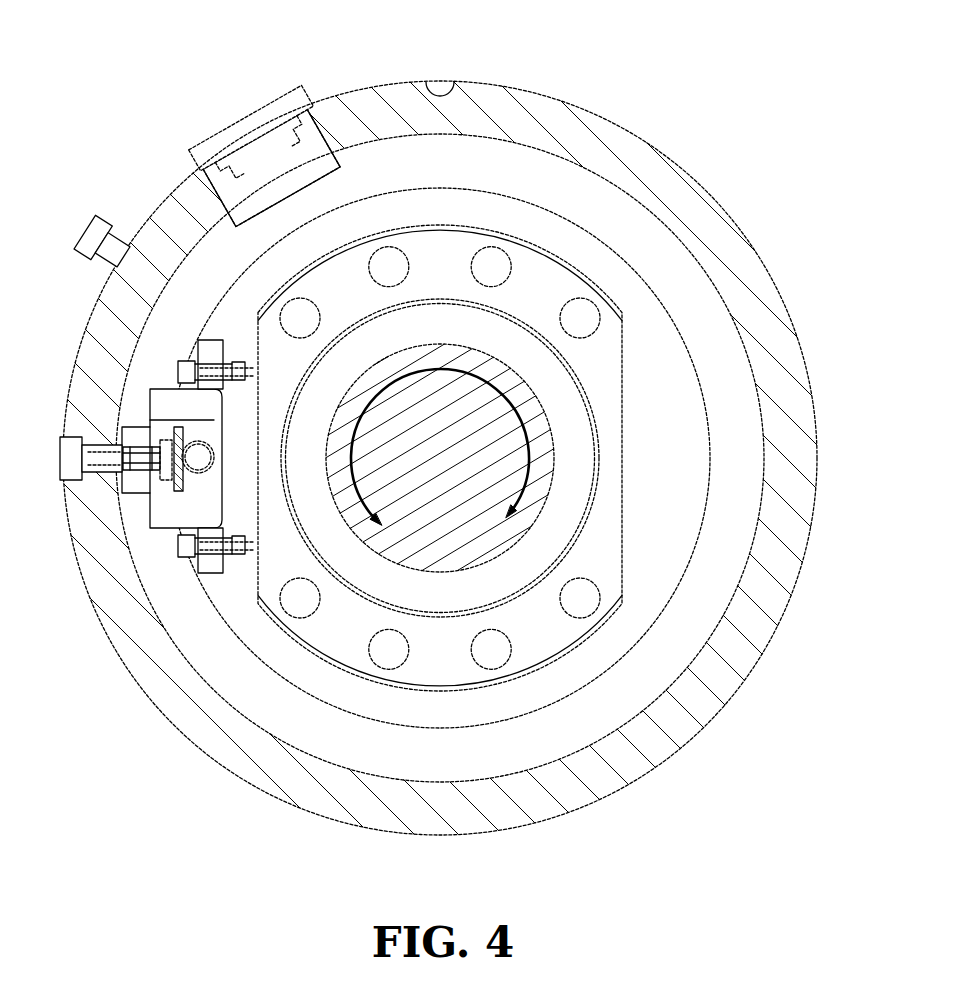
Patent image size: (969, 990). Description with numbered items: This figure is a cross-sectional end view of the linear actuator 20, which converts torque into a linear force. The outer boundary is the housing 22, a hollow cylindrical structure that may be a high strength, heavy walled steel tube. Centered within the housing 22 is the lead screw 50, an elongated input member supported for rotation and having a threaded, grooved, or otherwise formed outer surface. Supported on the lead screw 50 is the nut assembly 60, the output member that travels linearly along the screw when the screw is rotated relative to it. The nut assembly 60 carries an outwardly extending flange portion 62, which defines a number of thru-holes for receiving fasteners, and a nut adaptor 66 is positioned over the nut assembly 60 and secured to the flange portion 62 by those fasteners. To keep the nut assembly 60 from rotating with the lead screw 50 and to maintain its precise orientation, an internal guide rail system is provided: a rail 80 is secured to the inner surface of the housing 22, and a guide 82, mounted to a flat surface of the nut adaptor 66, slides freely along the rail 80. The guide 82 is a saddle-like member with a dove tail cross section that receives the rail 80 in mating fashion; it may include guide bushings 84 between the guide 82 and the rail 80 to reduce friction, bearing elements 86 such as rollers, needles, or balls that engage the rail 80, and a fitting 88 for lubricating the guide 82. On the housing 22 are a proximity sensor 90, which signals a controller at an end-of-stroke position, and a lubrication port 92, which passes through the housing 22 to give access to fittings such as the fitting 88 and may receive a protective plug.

The linear actuator 20 is at (654, 147).
The housing 22 is at (566, 118).
The lead screw 50 is at (530, 424).
The nut assembly 60 is at (573, 458).
The flange portion 62 is at (545, 635).
The nut adaptor 66 is at (665, 582).
The rail 80 is at (137, 437).
The guide 82 is at (157, 422).
The guide bushings 84 is at (147, 413).
The bearing elements 86 is at (183, 473).
The fitting 88 is at (192, 460).
The proximity sensors 90 is at (105, 245).
The lubrication ports 92 is at (270, 167).